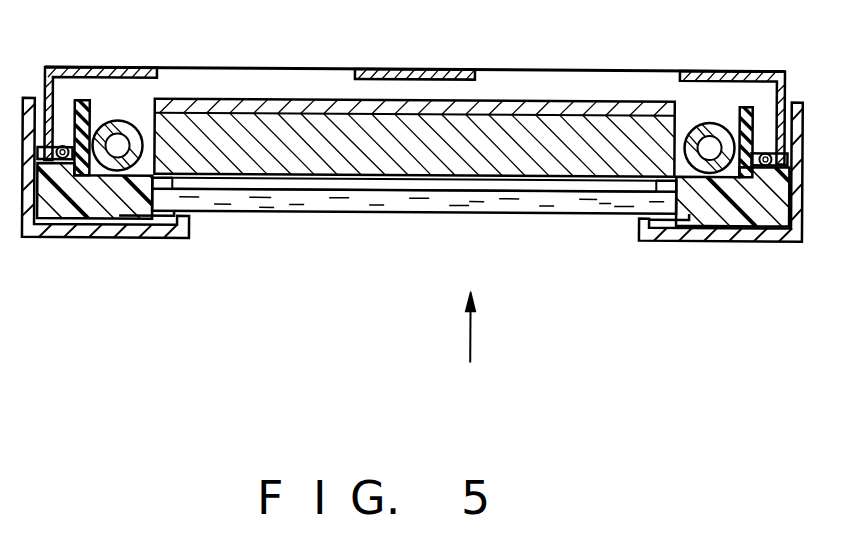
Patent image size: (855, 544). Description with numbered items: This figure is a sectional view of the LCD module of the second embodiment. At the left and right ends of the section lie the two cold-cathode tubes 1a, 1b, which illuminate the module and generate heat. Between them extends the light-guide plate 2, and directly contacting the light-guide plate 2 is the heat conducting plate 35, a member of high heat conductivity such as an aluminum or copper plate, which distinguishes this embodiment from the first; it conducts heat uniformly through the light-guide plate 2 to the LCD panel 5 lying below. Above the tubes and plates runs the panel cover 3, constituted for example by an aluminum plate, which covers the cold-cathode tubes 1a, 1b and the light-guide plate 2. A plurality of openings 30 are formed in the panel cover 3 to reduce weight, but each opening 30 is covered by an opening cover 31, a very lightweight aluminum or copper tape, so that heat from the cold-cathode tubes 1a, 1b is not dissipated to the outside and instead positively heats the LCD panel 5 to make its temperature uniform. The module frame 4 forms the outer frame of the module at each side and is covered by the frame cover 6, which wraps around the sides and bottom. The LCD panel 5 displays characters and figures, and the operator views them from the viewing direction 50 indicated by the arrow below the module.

The cold-cathode tube 1a is at (708, 118).
The cold-cathode tube 1b is at (118, 120).
The light-guide plate 2 is at (445, 112).
The panel cover 3 is at (61, 67).
The module frame 4 is at (146, 197).
The LCD panel 5 is at (369, 210).
The frame cover 6 is at (98, 232).
The opening 30 is at (265, 57).
The opening cover 31 is at (290, 67).
The heat conducting plate 35 is at (207, 97).
The viewing direction 50 is at (473, 332).